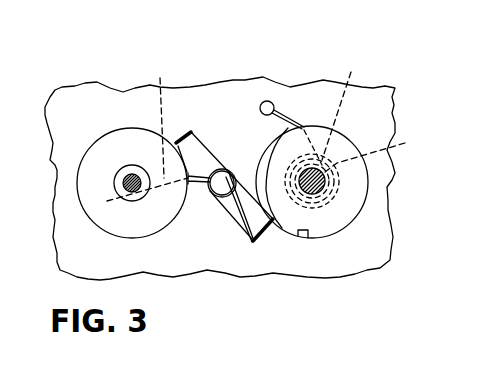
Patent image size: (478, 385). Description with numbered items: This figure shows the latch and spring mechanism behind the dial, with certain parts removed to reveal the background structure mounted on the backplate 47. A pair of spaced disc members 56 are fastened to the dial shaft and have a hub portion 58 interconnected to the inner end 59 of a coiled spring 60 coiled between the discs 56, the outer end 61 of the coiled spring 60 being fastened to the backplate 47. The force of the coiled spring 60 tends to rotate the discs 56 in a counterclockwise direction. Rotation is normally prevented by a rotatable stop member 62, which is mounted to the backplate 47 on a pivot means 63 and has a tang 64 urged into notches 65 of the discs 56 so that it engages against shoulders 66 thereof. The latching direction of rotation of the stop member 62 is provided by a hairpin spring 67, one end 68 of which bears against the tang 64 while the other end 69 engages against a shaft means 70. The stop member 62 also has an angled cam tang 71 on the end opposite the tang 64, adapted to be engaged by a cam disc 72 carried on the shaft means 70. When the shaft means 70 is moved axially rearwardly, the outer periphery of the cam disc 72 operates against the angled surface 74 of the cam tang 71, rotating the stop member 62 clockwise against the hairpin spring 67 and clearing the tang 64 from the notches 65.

The backplate 47 is at (380, 218).
The disc members 56 is at (338, 143).
The hub portion 58 is at (327, 179).
The inner end 59 is at (381, 150).
The coiled spring 60 is at (353, 109).
The outer end 61 is at (290, 127).
The stop member 62 is at (213, 152).
The pivot means 63 is at (208, 200).
The tang 64 is at (272, 226).
The notches 65 is at (296, 236).
The shoulders 66 is at (269, 155).
The hairpin spring 67 is at (192, 185).
The end 68 is at (235, 222).
The other end 69 is at (147, 128).
The shaft means 70 is at (114, 181).
The cam tang 71 is at (202, 153).
The cam disc 72 is at (100, 153).
The angled surface 74 is at (175, 137).